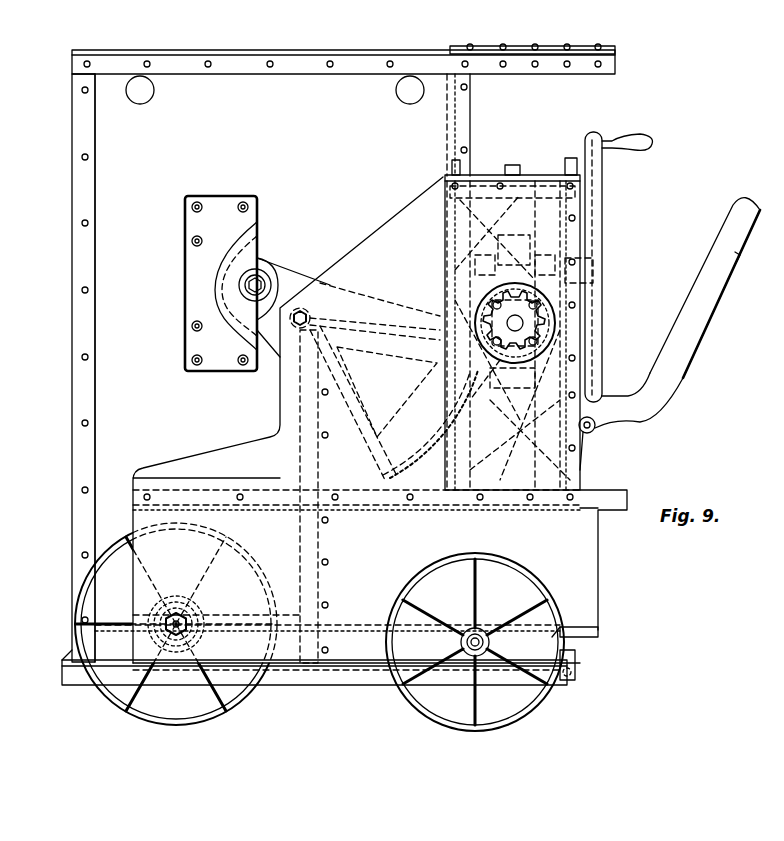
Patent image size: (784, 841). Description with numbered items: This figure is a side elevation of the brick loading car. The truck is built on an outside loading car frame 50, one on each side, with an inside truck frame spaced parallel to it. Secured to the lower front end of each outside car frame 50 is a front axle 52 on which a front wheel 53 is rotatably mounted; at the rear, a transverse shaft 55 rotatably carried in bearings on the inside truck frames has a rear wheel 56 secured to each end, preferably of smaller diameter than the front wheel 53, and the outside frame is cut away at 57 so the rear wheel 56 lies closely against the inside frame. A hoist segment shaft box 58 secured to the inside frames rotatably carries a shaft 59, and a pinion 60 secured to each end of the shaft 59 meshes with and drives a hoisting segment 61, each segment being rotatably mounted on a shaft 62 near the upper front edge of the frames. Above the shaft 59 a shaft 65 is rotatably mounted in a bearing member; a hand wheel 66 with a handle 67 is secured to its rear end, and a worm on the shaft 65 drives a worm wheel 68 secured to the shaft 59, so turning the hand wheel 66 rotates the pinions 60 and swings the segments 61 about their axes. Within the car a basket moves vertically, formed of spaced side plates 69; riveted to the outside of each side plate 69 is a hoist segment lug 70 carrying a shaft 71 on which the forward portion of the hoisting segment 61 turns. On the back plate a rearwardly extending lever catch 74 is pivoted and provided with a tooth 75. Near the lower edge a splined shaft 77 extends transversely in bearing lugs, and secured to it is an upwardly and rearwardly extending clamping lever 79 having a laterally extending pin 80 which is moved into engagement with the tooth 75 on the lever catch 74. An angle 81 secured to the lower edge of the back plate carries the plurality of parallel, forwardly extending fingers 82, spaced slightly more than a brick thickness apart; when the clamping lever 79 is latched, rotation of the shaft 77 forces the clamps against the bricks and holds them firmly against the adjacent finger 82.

The outside loading car frame 50 is at (337, 423).
The front axle 52 is at (176, 632).
The front wheel 53 is at (142, 706).
The shaft 55 is at (468, 654).
The rear wheel 56 is at (518, 702).
The cut-away 57 is at (385, 620).
The hoist segment shaft box 58 is at (535, 313).
The shaft 59 is at (537, 338).
The pinion 60 is at (523, 323).
The hoisting segment 61 is at (289, 275).
The shaft 62 is at (303, 311).
The shaft 65 is at (598, 270).
The hand wheel 66 is at (600, 240).
The handle 67 is at (648, 138).
The worm wheel 68 is at (525, 343).
The side plate 69 is at (107, 152).
The hoist segment lug 70 is at (240, 285).
The shaft 71 is at (248, 289).
The lever catch 74 is at (530, 420).
The tooth 75 is at (512, 424).
The splined shaft 77 is at (600, 632).
The clamping lever 79 is at (700, 327).
The pin 80 is at (595, 430).
The angle 81 is at (577, 662).
The fingers 82 is at (70, 676).